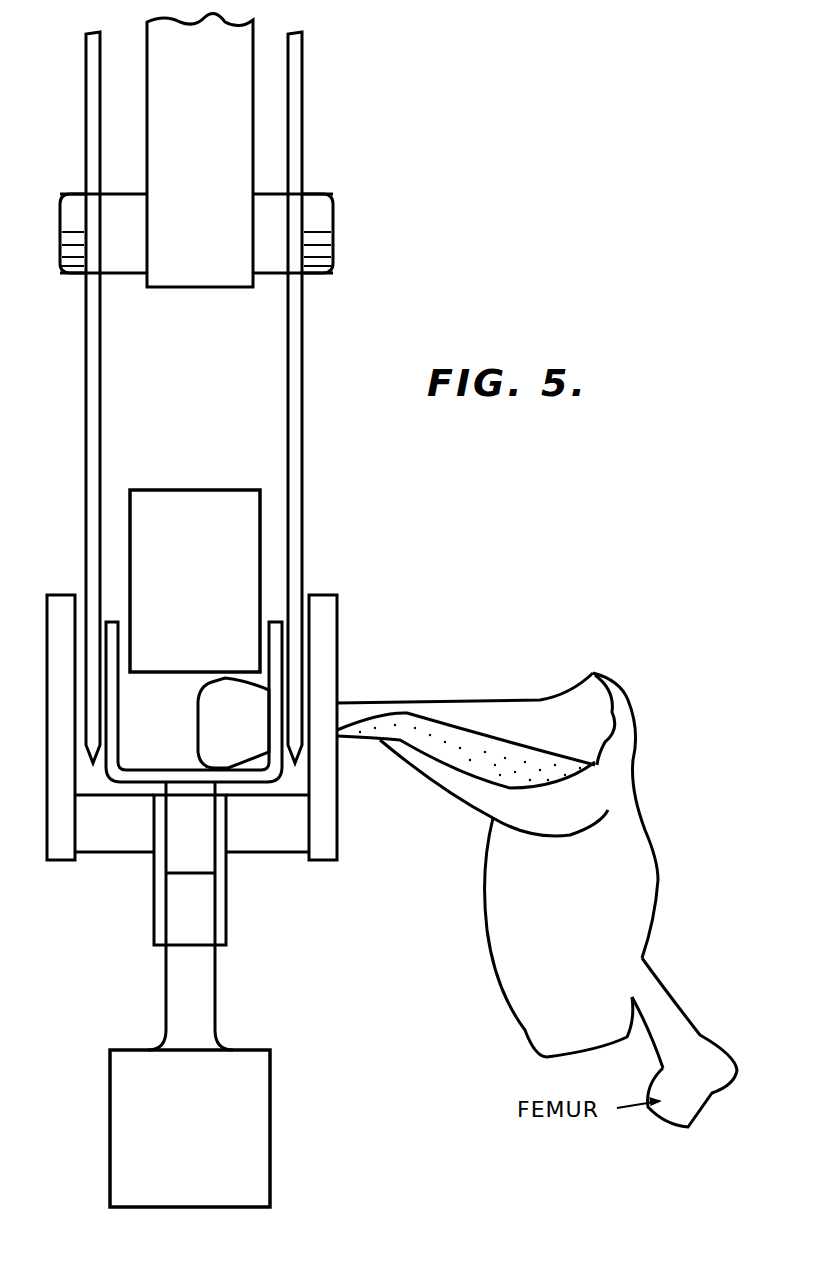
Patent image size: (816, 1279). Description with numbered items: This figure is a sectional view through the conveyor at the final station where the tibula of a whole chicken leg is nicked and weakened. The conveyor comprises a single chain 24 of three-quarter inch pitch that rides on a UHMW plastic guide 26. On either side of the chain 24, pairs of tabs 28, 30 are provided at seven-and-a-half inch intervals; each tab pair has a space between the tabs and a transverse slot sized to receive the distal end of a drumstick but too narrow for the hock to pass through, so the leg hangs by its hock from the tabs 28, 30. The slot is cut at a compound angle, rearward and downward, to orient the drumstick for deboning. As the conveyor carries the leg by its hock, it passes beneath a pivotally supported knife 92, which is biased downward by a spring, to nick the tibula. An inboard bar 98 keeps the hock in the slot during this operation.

The pivotally supported knife 92 is at (85, 505).
The inboard bar 98 is at (212, 605).
The tab 28 is at (326, 637).
The tab 30 is at (118, 712).
The chain 24 is at (226, 905).
The UHMW plastic guide 26 is at (210, 1139).